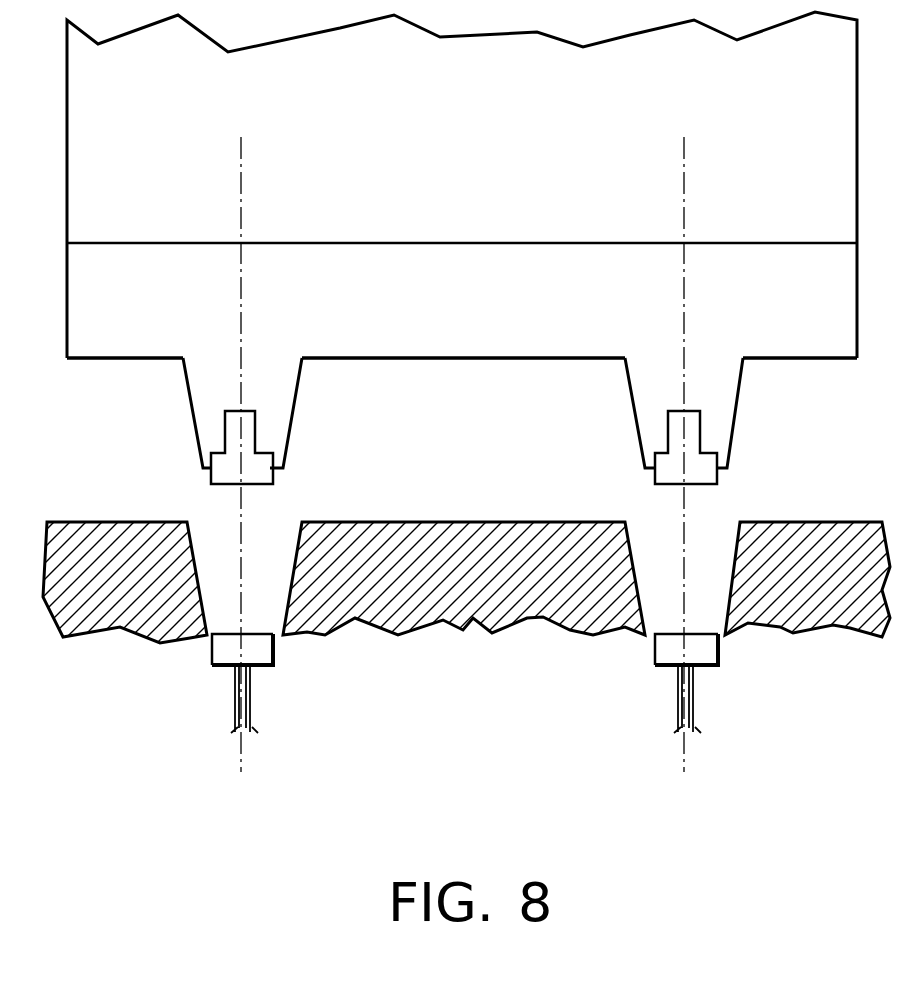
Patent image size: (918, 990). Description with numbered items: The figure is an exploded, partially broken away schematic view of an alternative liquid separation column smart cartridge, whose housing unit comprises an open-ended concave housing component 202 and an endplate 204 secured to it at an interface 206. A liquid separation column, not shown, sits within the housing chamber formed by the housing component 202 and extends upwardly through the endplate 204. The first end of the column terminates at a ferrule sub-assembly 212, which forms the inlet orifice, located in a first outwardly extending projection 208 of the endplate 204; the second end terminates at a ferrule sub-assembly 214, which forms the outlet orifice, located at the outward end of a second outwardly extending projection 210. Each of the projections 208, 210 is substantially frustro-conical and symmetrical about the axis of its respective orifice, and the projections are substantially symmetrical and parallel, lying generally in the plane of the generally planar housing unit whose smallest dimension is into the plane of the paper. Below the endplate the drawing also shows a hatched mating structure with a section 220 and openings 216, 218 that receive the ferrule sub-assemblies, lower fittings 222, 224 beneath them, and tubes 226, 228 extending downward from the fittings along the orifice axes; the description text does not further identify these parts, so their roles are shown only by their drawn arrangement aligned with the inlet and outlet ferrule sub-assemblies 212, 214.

The housing component 202 is at (480, 134).
The endplate 204 is at (320, 267).
The interface 206 is at (533, 243).
The outwardly extending projection 208 is at (645, 403).
The outwardly extending projection 210 is at (200, 420).
The ferrule sub-assembly 212 is at (704, 472).
The ferrule sub-assembly 214 is at (260, 476).
The right opening in plate 216 is at (643, 598).
The left opening in plate 218 is at (197, 570).
The plate (hatched section) 220 is at (468, 620).
The right lower fitting 222 is at (718, 662).
The left lower fitting 224 is at (273, 658).
The right tube 226 is at (680, 698).
The left tube 228 is at (250, 712).